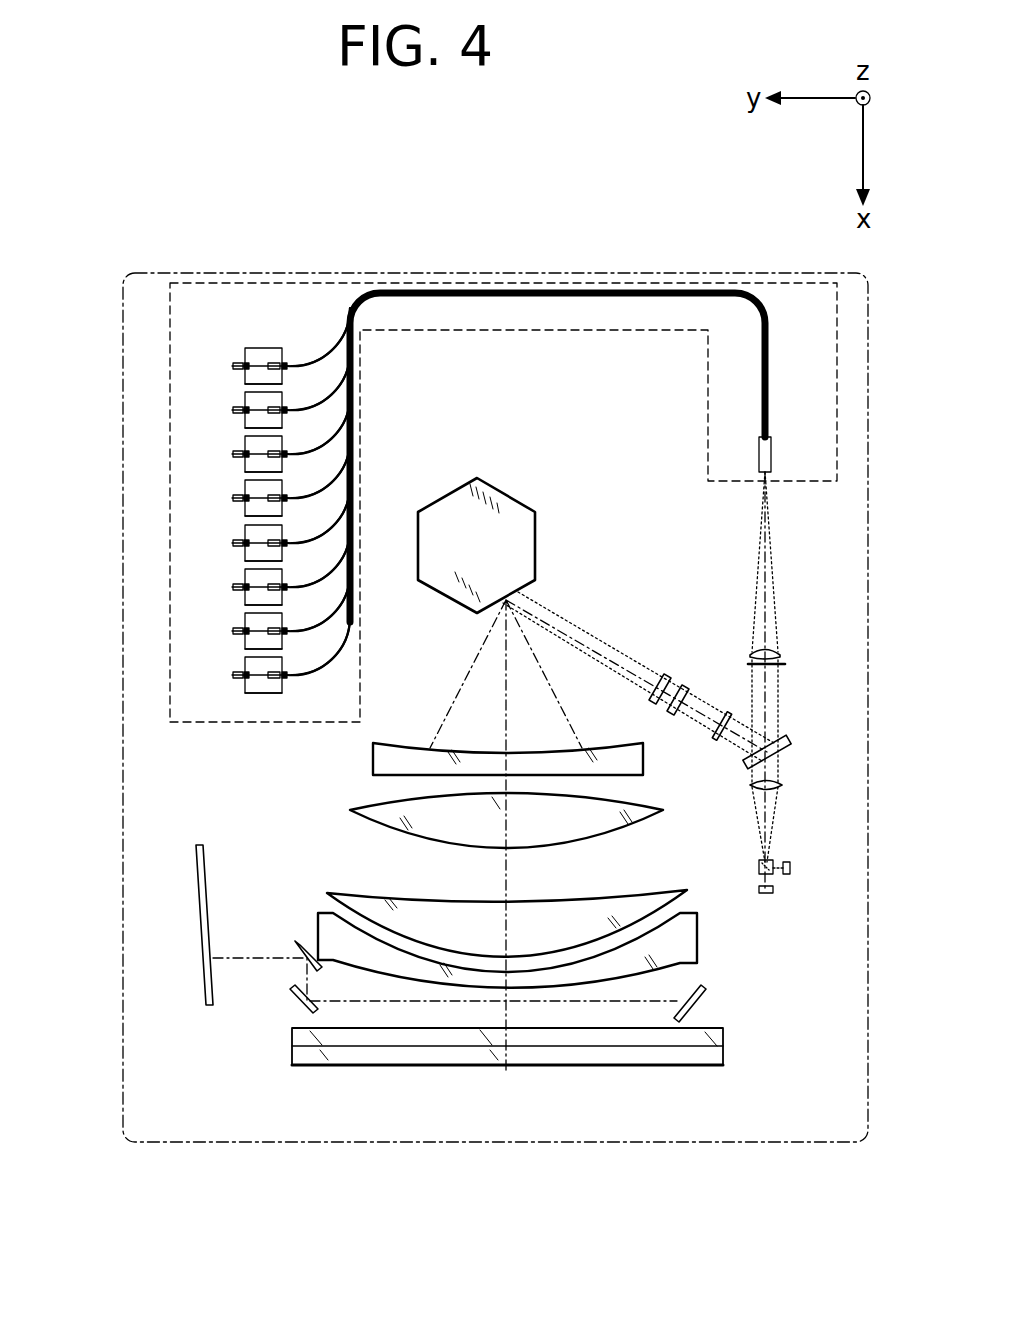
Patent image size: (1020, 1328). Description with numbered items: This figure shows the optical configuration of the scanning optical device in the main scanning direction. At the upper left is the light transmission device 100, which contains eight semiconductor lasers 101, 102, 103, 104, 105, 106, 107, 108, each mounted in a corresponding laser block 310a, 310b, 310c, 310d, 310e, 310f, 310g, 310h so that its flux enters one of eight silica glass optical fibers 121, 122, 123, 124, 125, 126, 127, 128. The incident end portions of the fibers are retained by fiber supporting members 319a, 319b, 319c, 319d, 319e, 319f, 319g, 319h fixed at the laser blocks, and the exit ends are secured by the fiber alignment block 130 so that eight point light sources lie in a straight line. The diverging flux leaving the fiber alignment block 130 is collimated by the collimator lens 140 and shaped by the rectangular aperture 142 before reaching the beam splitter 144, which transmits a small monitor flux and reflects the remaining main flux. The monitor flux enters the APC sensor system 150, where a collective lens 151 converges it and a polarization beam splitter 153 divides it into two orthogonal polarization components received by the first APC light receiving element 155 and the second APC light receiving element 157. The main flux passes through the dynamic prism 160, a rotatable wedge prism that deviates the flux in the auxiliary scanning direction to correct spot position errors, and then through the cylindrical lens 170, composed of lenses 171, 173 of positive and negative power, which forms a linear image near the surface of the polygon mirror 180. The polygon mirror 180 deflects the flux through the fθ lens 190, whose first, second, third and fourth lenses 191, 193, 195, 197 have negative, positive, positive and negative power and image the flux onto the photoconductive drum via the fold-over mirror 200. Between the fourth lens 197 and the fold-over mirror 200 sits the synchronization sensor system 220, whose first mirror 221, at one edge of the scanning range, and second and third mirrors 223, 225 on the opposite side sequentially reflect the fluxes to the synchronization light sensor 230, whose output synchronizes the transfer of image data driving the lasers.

The light transmission device 100 is at (621, 331).
The semiconductor laser 101 is at (234, 676).
The semiconductor laser 102 is at (234, 632).
The semiconductor laser 103 is at (234, 588).
The semiconductor laser 104 is at (234, 544).
The semiconductor laser 105 is at (234, 499).
The semiconductor laser 106 is at (234, 455).
The semiconductor laser 107 is at (234, 411).
The semiconductor laser 108 is at (234, 367).
The silica glass optical fiber 121 is at (353, 675).
The silica glass optical fiber 122 is at (353, 631).
The silica glass optical fiber 123 is at (353, 587).
The silica glass optical fiber 124 is at (353, 543).
The silica glass optical fiber 125 is at (353, 498).
The silica glass optical fiber 126 is at (353, 454).
The silica glass optical fiber 127 is at (353, 410).
The silica glass optical fiber 128 is at (353, 366).
The fiber alignment block 130 is at (796, 452).
The collimator lens 140 is at (780, 653).
The aperture 142 is at (783, 664).
The beam splitter 144 is at (788, 745).
The APC sensor system 150 is at (843, 758).
The collective lens 151 is at (779, 788).
The polarization beam splitter 153 is at (770, 862).
The first APC light receiving element 155 is at (767, 890).
The second APC light receiving element 157 is at (815, 882).
The dynamic prism 160 is at (710, 734).
The cylindrical lens 170 is at (725, 612).
The lens 171 is at (681, 686).
The lens 173 is at (659, 674).
The polygon mirror 180 is at (500, 492).
The fθ lens 190 is at (262, 755).
The first lens 191 is at (373, 761).
The second lens 193 is at (349, 811).
The third lens 195 is at (327, 895).
The fourth lens 197 is at (320, 931).
The fold-over mirror 200 is at (302, 1057).
The synchronization sensor system 220 is at (630, 1128).
The first mirror 221 is at (677, 1020).
The second mirror 223 is at (315, 1010).
The third mirror 225 is at (318, 967).
The synchronization light sensor 230 is at (213, 983).
The laser block 310a is at (249, 687).
The laser block 310b is at (249, 643).
The laser block 310c is at (249, 599).
The laser block 310d is at (249, 555).
The laser block 310e is at (249, 510).
The laser block 310f is at (249, 466).
The laser block 310g is at (249, 422).
The laser block 310h is at (249, 378).
The fiber supporting member 319a is at (316, 670).
The fiber supporting member 319b is at (316, 626).
The fiber supporting member 319c is at (316, 582).
The fiber supporting member 319d is at (316, 538).
The fiber supporting member 319e is at (316, 493).
The fiber supporting member 319f is at (316, 449).
The fiber supporting member 319g is at (316, 405).
The fiber supporting member 319h is at (316, 361).